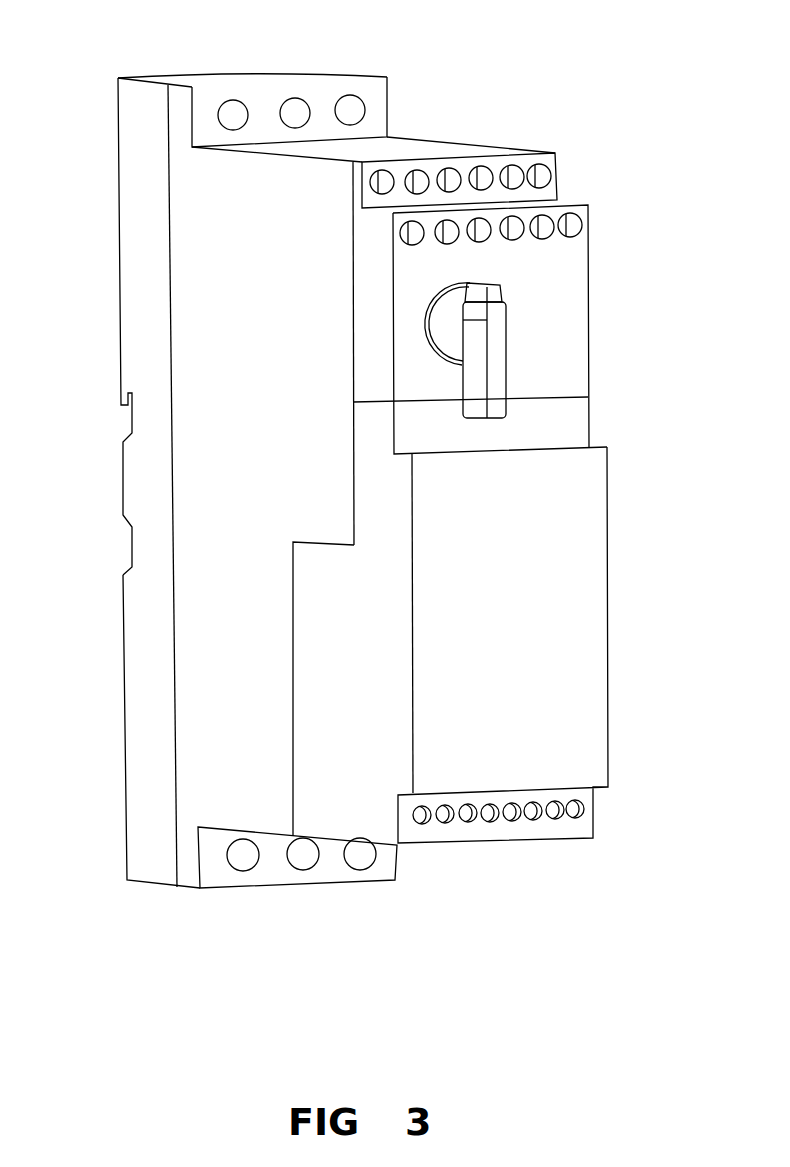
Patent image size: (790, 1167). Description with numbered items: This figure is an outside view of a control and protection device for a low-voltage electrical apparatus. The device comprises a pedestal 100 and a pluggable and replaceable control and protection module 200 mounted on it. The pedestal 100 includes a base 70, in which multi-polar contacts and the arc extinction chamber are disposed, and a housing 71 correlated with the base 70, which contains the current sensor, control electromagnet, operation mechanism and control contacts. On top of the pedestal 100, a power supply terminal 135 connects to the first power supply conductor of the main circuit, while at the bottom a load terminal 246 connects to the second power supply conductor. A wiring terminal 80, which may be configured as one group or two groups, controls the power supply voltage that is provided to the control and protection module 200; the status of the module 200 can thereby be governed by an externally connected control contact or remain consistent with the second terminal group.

The base 70 is at (133, 253).
The housing 71 is at (205, 767).
The wiring terminal 80 is at (543, 223).
The pedestal 100 is at (570, 308).
The power supply terminal 135 is at (350, 110).
The control and protection module 200 is at (565, 612).
The load terminal 246 is at (243, 857).